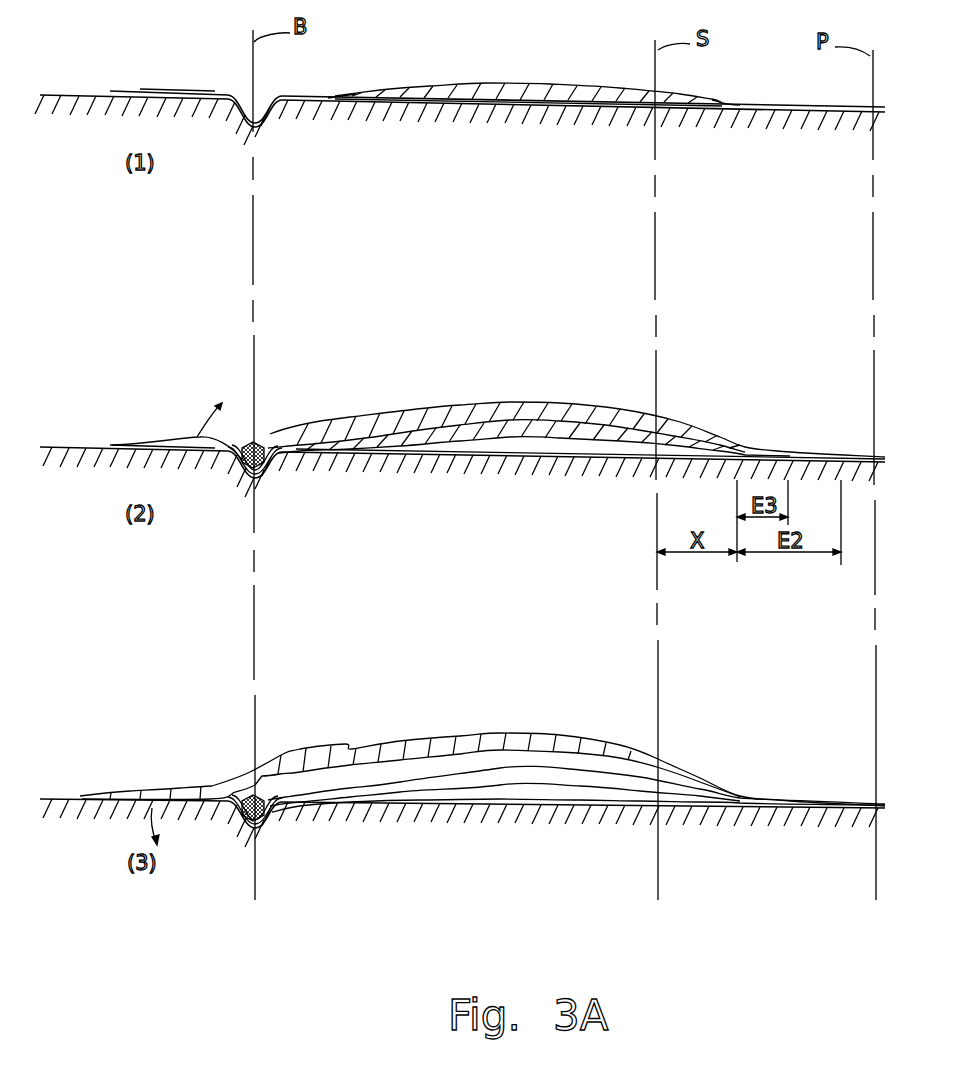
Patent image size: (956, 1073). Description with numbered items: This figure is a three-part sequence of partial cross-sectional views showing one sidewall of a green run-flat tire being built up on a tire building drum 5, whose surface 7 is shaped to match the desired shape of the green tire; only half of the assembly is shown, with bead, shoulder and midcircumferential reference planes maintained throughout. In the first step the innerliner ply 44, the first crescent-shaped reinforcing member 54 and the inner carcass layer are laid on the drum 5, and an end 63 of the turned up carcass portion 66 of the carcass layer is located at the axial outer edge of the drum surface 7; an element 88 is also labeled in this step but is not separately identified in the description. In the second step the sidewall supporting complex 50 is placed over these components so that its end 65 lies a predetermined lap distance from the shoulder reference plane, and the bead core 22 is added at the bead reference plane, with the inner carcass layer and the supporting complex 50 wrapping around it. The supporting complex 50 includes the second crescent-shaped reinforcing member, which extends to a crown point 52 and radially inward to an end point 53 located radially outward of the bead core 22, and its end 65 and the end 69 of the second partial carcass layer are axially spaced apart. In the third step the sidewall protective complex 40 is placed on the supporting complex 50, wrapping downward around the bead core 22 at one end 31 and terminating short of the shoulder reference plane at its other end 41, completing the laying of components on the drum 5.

The tire building drum 5 is at (810, 174).
The drum surface 7 is at (63, 93).
The bead core 22 is at (259, 445).
The end of sidewall protective complex 31 is at (82, 798).
The sidewall protective complex 40 is at (501, 733).
The end of sidewall protective complex 41 is at (604, 749).
The innerliner ply 44 is at (742, 115).
The sidewall supporting complex 50 is at (512, 400).
The crown point of second crescent-shaped reinforcing member 52 is at (716, 101).
The end point of second crescent-shaped reinforcing member 53 is at (340, 97).
The first crescent-shaped reinforcing member 54 is at (497, 110).
The end of turned up carcass portion 63 is at (110, 93).
The end of sidewall supporting complex 65 is at (834, 456).
The turned up carcass portion 66 is at (143, 93).
The end of second partial carcass layer 69 is at (782, 452).
The layer 88 is at (487, 88).